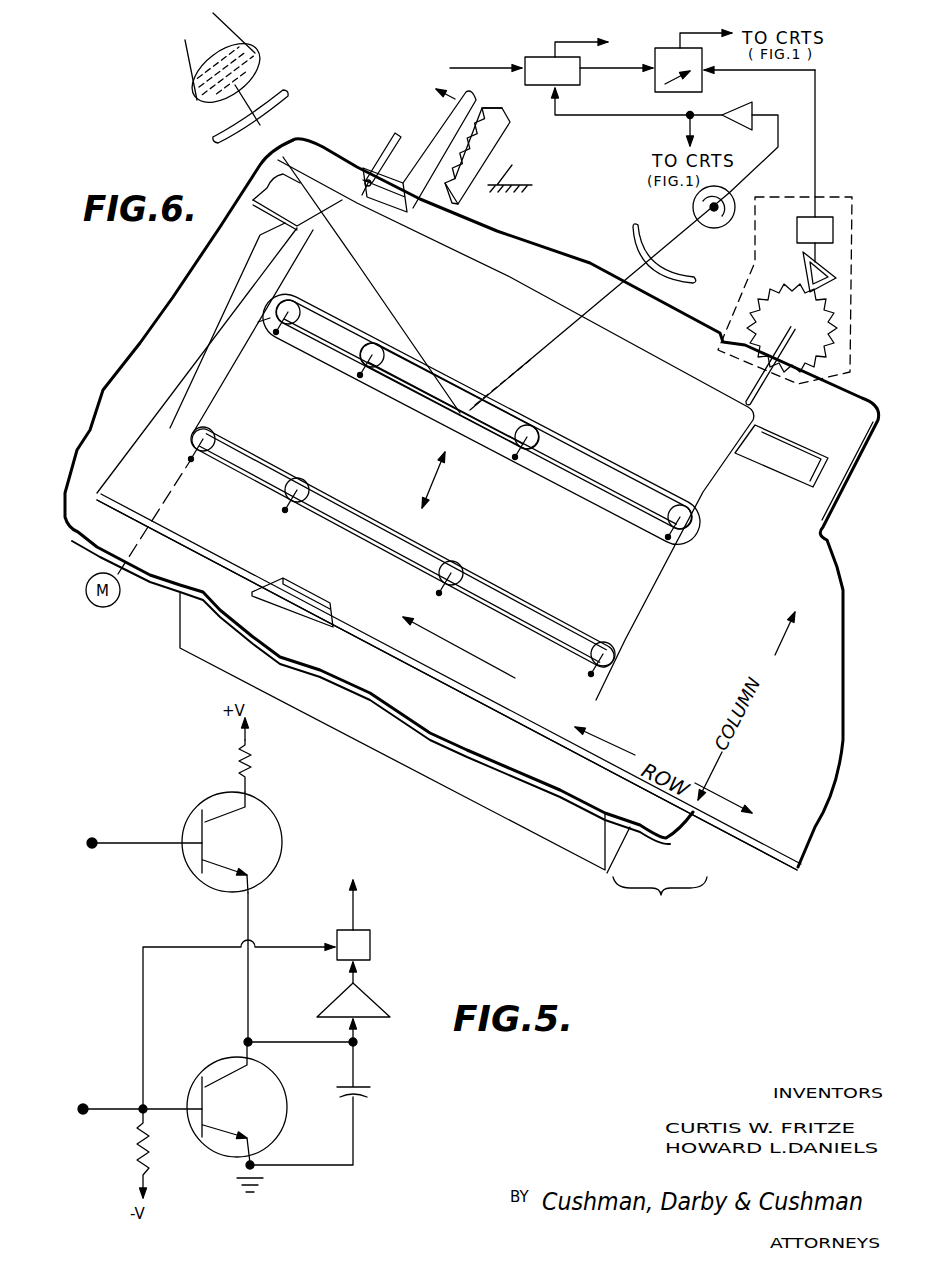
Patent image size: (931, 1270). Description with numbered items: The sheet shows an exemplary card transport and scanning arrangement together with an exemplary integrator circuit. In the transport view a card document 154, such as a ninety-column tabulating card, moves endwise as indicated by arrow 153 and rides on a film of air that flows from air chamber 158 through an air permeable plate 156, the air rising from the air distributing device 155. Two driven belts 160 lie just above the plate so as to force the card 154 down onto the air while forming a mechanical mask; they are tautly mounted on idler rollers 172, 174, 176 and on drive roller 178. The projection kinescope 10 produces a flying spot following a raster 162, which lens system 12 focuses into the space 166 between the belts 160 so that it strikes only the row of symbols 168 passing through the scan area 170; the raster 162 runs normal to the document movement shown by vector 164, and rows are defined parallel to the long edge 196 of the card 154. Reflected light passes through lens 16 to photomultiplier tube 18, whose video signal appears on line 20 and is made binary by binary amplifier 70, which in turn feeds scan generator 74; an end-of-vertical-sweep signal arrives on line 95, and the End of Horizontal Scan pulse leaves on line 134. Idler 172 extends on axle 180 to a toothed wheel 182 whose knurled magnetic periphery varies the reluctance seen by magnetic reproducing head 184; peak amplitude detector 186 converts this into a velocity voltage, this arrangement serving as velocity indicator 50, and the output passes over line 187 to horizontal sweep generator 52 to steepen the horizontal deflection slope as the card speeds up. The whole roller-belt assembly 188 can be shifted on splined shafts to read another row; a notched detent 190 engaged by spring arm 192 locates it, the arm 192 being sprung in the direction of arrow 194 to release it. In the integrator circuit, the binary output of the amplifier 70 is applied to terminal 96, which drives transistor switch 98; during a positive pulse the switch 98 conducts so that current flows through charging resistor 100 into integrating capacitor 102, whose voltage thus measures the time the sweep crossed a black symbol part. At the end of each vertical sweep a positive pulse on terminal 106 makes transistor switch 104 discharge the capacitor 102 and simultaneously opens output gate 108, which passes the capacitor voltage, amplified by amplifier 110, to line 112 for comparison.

In FIG. 6, the projection kinescope 10 is at (257, 58).
In FIG. 6, the lens system 12 is at (280, 95).
In FIG. 6, the raster 162 is at (446, 303).
In FIG. 6, the arrow 194 is at (439, 138).
In FIG. 6, the spring arm 192 is at (438, 148).
In FIG. 6, the notched detent 190 is at (503, 142).
In FIG. 6, the line 134 is at (576, 41).
In FIG. 6, the line 95 is at (508, 60).
In FIG. 6, the horizontal sweep generator 52 is at (655, 50).
In FIG. 6, the scan generator 74 is at (577, 88).
In FIG. 6, the binary amplifier 70 is at (753, 108).
In FIG. 6, the line 20 is at (686, 122).
In FIG. 6, the line 187 is at (820, 92).
In FIG. 6, the photomultiplier tube 18 is at (717, 229).
In FIG. 6, the lens 16 is at (688, 277).
In FIG. 6, the velocity indicator 50 is at (838, 197).
In FIG. 6, the peak amplitude detector 186 is at (798, 232).
In FIG. 6, the magnetic reproducing head 184 is at (803, 262).
In FIG. 6, the toothed wheel 182 is at (838, 315).
In FIG. 6, the axle 180 is at (765, 390).
In FIG. 6, the roller-belt assembly 188 is at (218, 352).
In FIG. 6, the driven belts 160 is at (336, 422).
In FIG. 6, the drive roller 178 is at (218, 432).
In FIG. 6, the idler roller 176 is at (307, 477).
In FIG. 6, the vector 164 is at (433, 480).
In FIG. 6, the scan area 170 is at (470, 440).
In FIG. 6, the space 166 is at (600, 469).
In FIG. 6, the idler roller 174 is at (460, 562).
In FIG. 6, the arrow 153 is at (466, 651).
In FIG. 6, the row of symbols 168 is at (728, 578).
In FIG. 6, the idler roller 172 is at (612, 665).
In FIG. 6, the long edge 196 is at (530, 730).
In FIG. 6, the card document 154 is at (805, 837).
In FIG. 6, the air permeable plate 156 is at (678, 835).
In FIG. 6, the air chamber 158 is at (610, 853).
In FIG. 6, the air distributing device 155 is at (660, 896).
In FIG. 5, the charging resistor 100 is at (237, 752).
In FIG. 5, the transistor switch 98 is at (195, 812).
In FIG. 5, the terminal 96 is at (90, 840).
In FIG. 5, the line 112 is at (356, 912).
In FIG. 5, the output gate 108 is at (372, 957).
In FIG. 5, the amplifier 110 is at (377, 1003).
In FIG. 5, the terminal 106 is at (85, 1097).
In FIG. 5, the transistor switch 104 is at (205, 1077).
In FIG. 5, the integrating capacitor 102 is at (368, 1090).